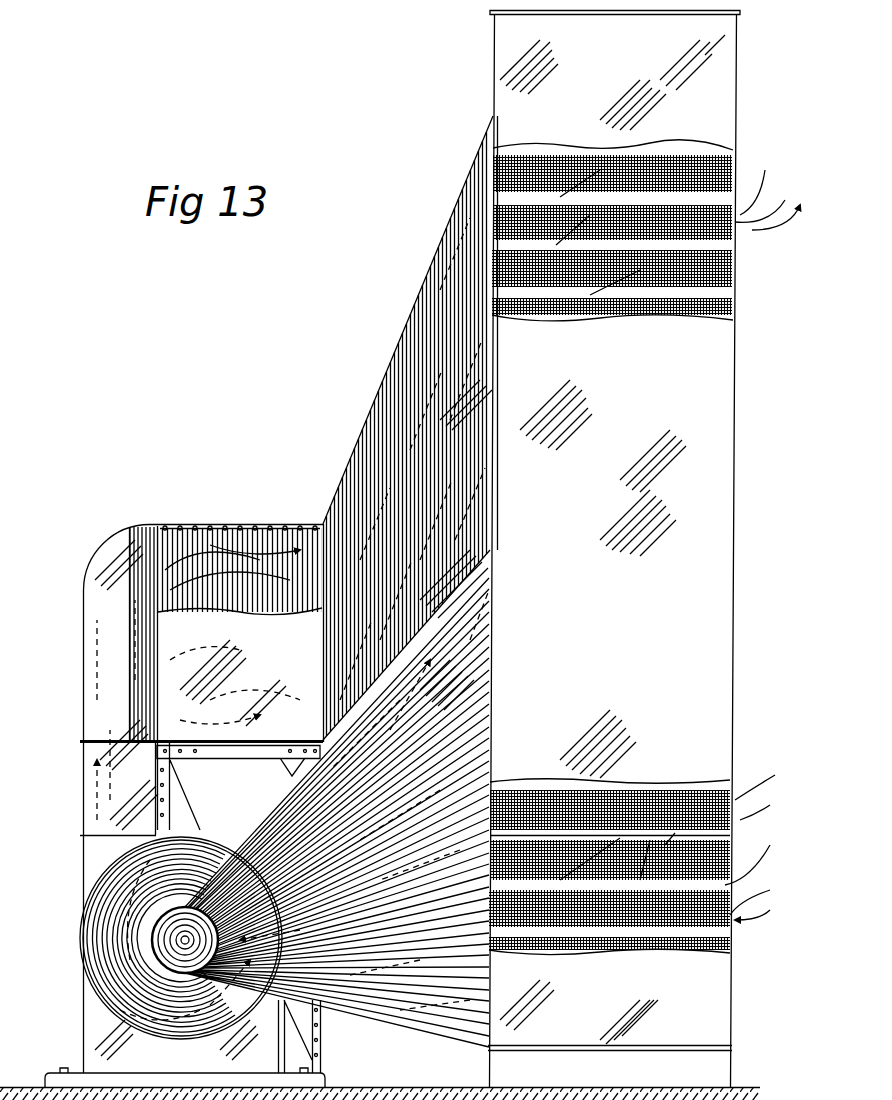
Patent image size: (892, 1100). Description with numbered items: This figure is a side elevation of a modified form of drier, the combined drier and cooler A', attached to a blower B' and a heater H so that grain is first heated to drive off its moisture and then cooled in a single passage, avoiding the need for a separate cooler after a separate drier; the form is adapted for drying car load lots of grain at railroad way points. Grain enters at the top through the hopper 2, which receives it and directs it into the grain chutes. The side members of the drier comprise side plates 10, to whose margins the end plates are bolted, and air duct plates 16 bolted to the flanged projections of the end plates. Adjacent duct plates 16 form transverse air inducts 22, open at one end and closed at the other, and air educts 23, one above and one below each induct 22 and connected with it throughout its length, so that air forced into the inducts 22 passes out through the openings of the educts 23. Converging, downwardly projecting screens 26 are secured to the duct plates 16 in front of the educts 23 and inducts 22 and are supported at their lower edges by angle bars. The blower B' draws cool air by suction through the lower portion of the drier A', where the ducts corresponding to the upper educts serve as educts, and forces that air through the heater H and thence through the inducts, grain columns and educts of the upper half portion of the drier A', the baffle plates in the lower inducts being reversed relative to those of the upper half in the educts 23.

The hopper 2 is at (727, 71).
The side plates 10 is at (588, 712).
The air duct plates 16 is at (720, 839).
The air inducts 22 is at (727, 164).
The air educts 23 is at (732, 236).
The screens 26 is at (727, 860).
The combined drier and cooler A' is at (634, 472).
The blower B' is at (259, 812).
The heater H is at (232, 537).